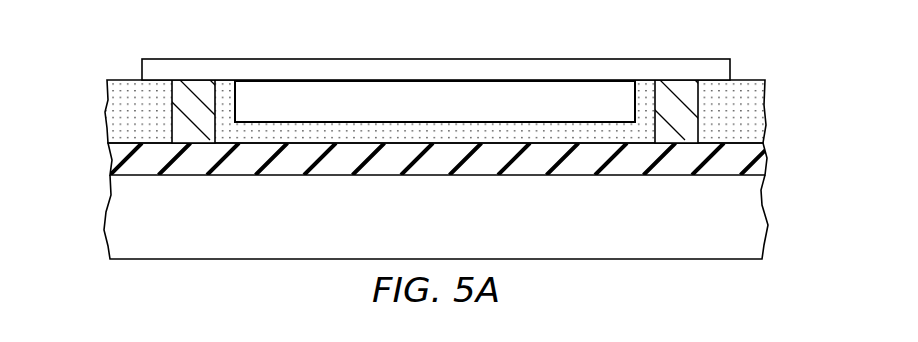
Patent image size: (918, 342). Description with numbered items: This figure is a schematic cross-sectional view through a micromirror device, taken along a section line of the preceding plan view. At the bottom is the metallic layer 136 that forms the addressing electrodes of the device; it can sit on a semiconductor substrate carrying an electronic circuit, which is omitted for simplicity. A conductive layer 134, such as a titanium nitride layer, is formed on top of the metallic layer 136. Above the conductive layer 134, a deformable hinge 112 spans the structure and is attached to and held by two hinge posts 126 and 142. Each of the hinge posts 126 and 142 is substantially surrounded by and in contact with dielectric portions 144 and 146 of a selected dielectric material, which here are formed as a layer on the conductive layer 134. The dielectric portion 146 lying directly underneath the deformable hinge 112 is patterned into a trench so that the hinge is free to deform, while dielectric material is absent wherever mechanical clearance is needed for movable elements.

The deformable hinge 112 is at (435, 67).
The hinge post 126 is at (192, 90).
The conductive layer 134 is at (765, 160).
The metallic layer 136 is at (456, 229).
The hinge post 142 is at (668, 90).
The dielectric portion 144 is at (110, 105).
The dielectric portion 146 is at (227, 95).